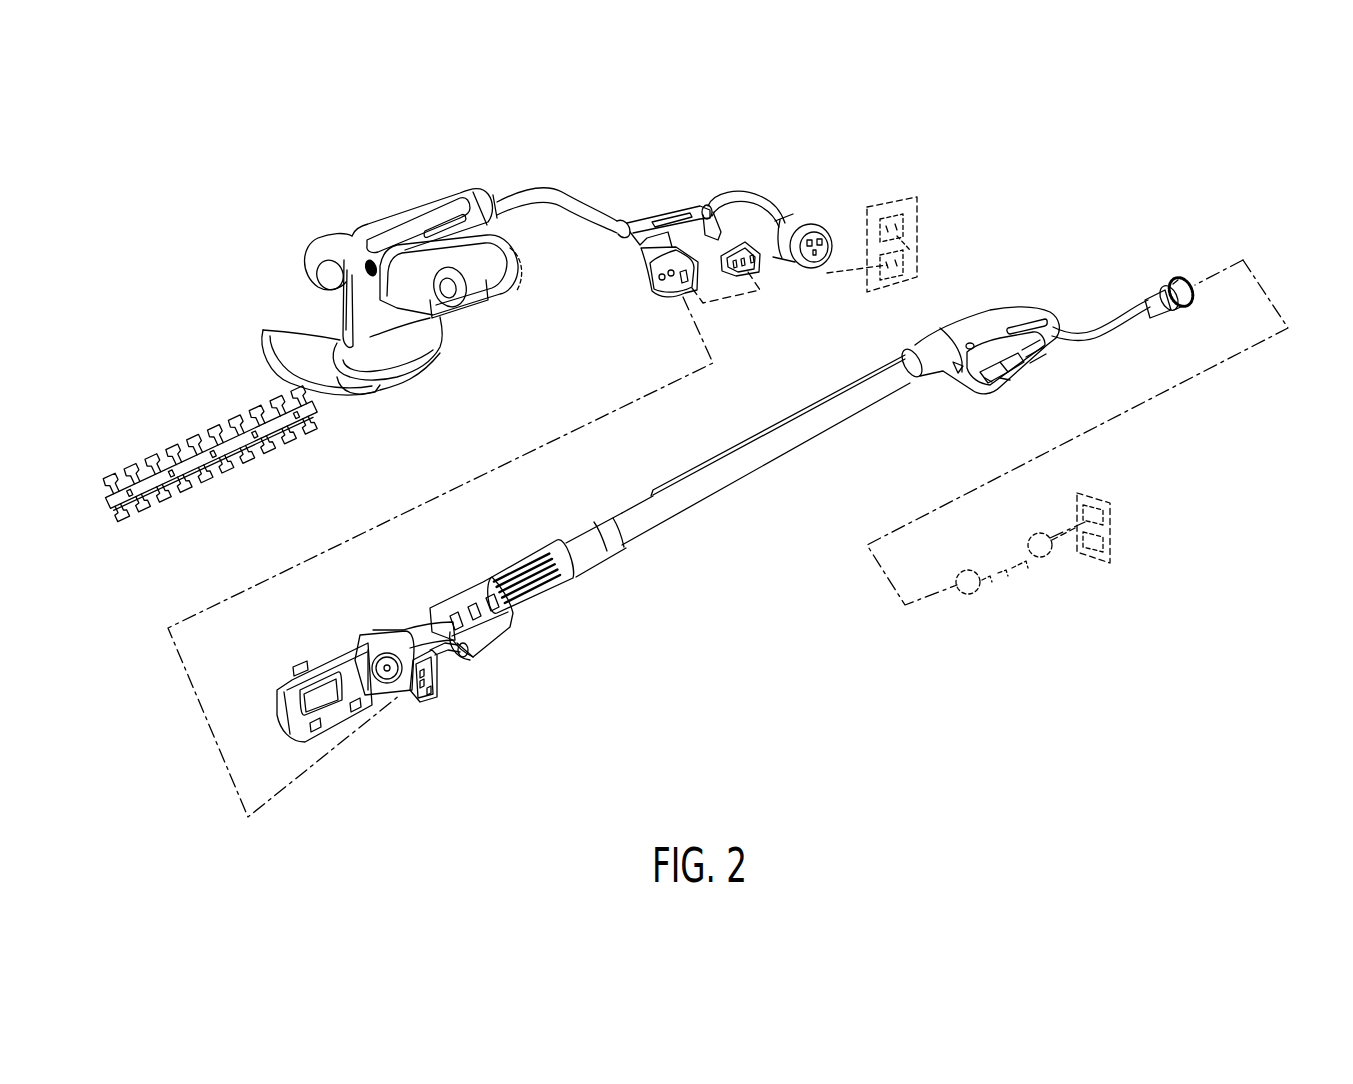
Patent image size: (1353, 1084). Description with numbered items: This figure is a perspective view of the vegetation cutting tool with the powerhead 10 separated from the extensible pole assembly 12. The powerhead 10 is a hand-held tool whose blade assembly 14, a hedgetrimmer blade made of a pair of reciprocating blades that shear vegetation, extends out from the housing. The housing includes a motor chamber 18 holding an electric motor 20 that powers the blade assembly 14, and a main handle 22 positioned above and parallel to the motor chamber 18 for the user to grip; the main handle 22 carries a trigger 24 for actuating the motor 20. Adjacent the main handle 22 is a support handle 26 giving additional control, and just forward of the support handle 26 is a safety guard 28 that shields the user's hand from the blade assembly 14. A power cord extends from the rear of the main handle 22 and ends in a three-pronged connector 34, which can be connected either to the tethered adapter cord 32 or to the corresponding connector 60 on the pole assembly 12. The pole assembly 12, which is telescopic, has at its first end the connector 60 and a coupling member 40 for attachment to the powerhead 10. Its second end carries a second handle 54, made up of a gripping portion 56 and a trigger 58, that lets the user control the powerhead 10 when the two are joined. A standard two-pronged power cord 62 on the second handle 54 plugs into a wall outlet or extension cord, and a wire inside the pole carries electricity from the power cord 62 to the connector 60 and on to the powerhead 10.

The powerhead 10 is at (338, 189).
The extensible pole assembly 12 is at (673, 530).
The blade assembly 14 is at (148, 521).
The motor chamber 18 is at (517, 287).
The electric motor 20 is at (483, 280).
The main handle 22 is at (414, 210).
The trigger 24 is at (435, 335).
The support handle 26 is at (316, 257).
The safety guard 28 is at (278, 350).
The adapter cord 32 is at (760, 183).
The three-pronged connector 34 is at (646, 283).
The coupling member 40 is at (323, 738).
The second handle 54 is at (963, 408).
The gripping portion 56 is at (1005, 318).
The trigger 58 is at (1018, 365).
The connector 60 is at (437, 677).
The two-pronged power cord 62 is at (1108, 322).